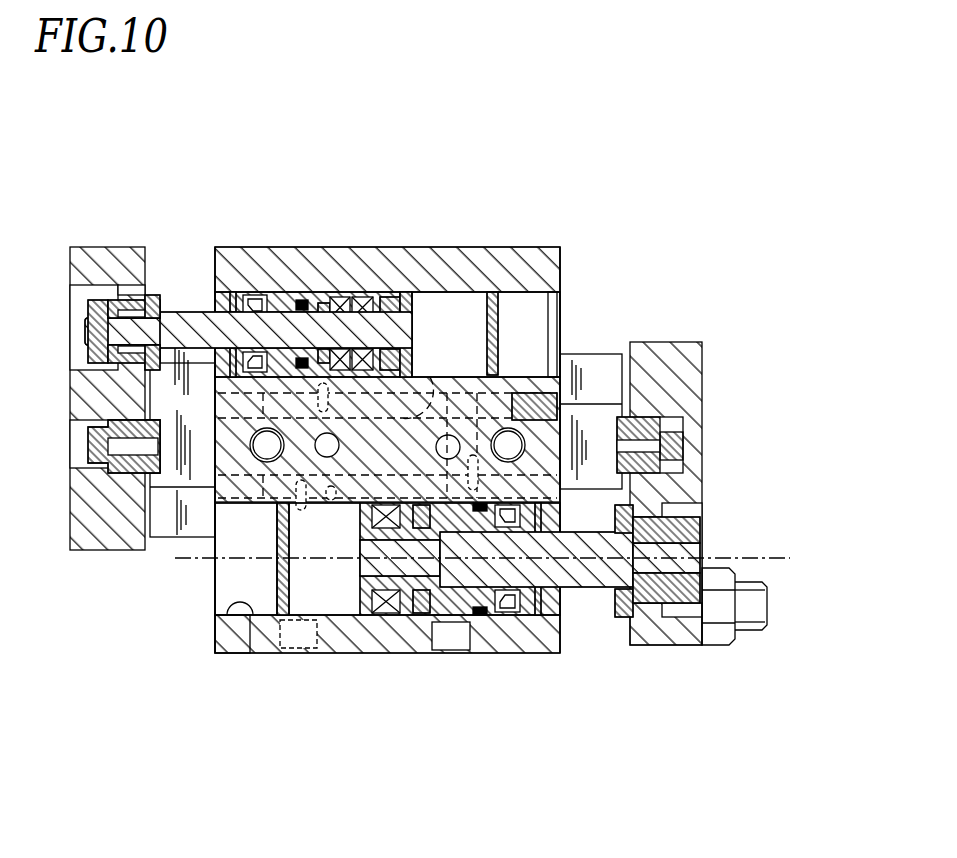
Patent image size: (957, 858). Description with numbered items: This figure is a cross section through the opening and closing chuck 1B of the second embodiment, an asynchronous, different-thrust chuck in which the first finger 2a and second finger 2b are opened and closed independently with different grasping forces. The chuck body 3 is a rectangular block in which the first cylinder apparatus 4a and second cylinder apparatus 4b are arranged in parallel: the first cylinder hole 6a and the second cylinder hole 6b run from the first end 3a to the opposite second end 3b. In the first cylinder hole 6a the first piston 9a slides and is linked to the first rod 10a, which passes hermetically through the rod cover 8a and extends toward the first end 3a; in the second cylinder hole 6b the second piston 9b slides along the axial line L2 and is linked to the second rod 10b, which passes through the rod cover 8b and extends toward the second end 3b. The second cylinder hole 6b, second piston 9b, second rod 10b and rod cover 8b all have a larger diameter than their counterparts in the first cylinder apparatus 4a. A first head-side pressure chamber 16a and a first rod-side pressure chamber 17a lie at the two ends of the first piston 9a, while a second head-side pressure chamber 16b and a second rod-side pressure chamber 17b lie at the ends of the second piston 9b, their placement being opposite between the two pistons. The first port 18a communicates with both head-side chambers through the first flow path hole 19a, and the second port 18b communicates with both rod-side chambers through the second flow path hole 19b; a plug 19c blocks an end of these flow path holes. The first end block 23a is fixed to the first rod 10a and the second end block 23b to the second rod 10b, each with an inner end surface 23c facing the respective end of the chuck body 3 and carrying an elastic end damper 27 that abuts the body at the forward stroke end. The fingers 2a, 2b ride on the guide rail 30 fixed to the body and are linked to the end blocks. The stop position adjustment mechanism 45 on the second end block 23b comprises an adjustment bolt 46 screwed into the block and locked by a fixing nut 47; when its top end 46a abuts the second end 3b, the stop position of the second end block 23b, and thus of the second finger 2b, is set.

The opening and closing chuck 1B is at (498, 146).
The chuck body 3 is at (535, 262).
The first end 3a is at (216, 256).
The second end 3b is at (562, 282).
The first cylinder apparatus 4a is at (177, 238).
The second cylinder apparatus 4b is at (576, 658).
The first cylinder hole 6a is at (536, 300).
The second cylinder hole 6b is at (232, 640).
The rod cover 8a is at (276, 295).
The rod cover 8b is at (495, 612).
The first piston 9a is at (379, 296).
The second piston 9b is at (398, 636).
The first rod 10a is at (183, 335).
The second rod 10b is at (558, 620).
The first head-side pressure chamber 16a is at (434, 310).
The second head-side pressure chamber 16b is at (330, 602).
The first rod-side pressure chamber 17a is at (325, 300).
The second rod-side pressure chamber 17b is at (462, 625).
The first port 18a is at (300, 650).
The second port 18b is at (448, 652).
The first flow path hole 19a is at (335, 500).
The second flow path hole 19b is at (423, 403).
The plug 19c is at (525, 393).
The first finger 2a is at (167, 525).
The second finger 2b is at (608, 381).
The first end block 23a is at (93, 540).
The second end block 23b is at (672, 360).
The inner end surface 23c is at (629, 636).
The end damper 27 is at (103, 443).
The guide rail 30 is at (173, 468).
The stop position adjustment mechanism 45 is at (741, 663).
The adjustment bolt 46 is at (750, 616).
The top end 46a is at (620, 618).
The fixing nut 47 is at (721, 632).
The axial line L2 is at (474, 575).